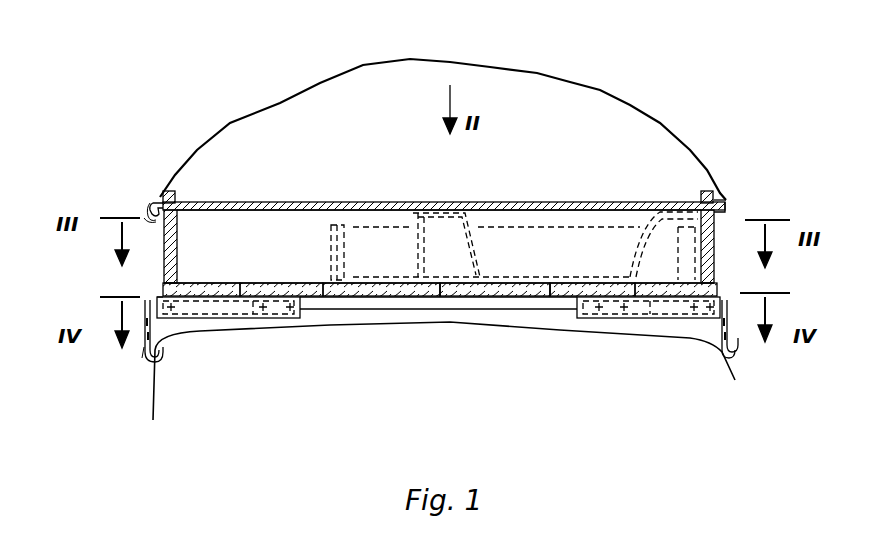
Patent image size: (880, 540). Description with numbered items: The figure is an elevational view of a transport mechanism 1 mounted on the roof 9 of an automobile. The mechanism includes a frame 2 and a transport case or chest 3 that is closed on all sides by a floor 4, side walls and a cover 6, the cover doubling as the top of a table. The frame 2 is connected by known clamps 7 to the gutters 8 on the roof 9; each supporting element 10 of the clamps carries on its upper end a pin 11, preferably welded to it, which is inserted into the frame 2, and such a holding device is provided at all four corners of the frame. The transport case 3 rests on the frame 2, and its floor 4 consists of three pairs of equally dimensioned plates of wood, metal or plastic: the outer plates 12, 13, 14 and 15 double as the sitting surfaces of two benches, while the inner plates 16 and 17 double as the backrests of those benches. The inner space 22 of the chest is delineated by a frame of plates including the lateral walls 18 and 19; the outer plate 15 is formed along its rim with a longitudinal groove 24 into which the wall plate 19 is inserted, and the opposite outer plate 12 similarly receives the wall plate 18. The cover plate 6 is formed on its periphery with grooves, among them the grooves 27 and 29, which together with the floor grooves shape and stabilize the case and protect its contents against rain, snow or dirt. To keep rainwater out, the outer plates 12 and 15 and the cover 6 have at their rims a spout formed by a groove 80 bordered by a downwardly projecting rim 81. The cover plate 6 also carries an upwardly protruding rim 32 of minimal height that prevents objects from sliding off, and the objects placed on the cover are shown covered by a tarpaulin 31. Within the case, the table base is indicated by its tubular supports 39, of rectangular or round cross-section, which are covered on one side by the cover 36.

The transport mechanism 1 is at (199, 158).
The frame 2 is at (266, 325).
The transport case or chest 3 is at (738, 205).
The floor 4 is at (455, 322).
The cover 6 is at (527, 200).
The clamps 7 is at (134, 378).
The gutters 8 is at (150, 362).
The roof 9 is at (444, 371).
The supporting element 10 is at (140, 352).
The pin 11 is at (157, 292).
The outer plate 12 is at (225, 293).
The outer plate 13 is at (280, 293).
The outer plate 14 is at (572, 285).
The outer plate 15 is at (668, 290).
The inner plate 16 is at (370, 298).
The inner plate 17 is at (515, 298).
The lateral wall plate 18 is at (177, 228).
The lateral wall plate 19 is at (728, 202).
The inner space 22 is at (303, 222).
The longitudinal groove 24 is at (178, 272).
The groove 27 is at (175, 192).
The groove 29 is at (698, 201).
The tarpaulin 31 is at (600, 88).
The upwardly protruding rim 32 is at (163, 192).
The cover 36 is at (541, 302).
The tubular support 39 is at (343, 225).
The groove 80 is at (145, 212).
The downwardly projecting rim 81 is at (147, 208).